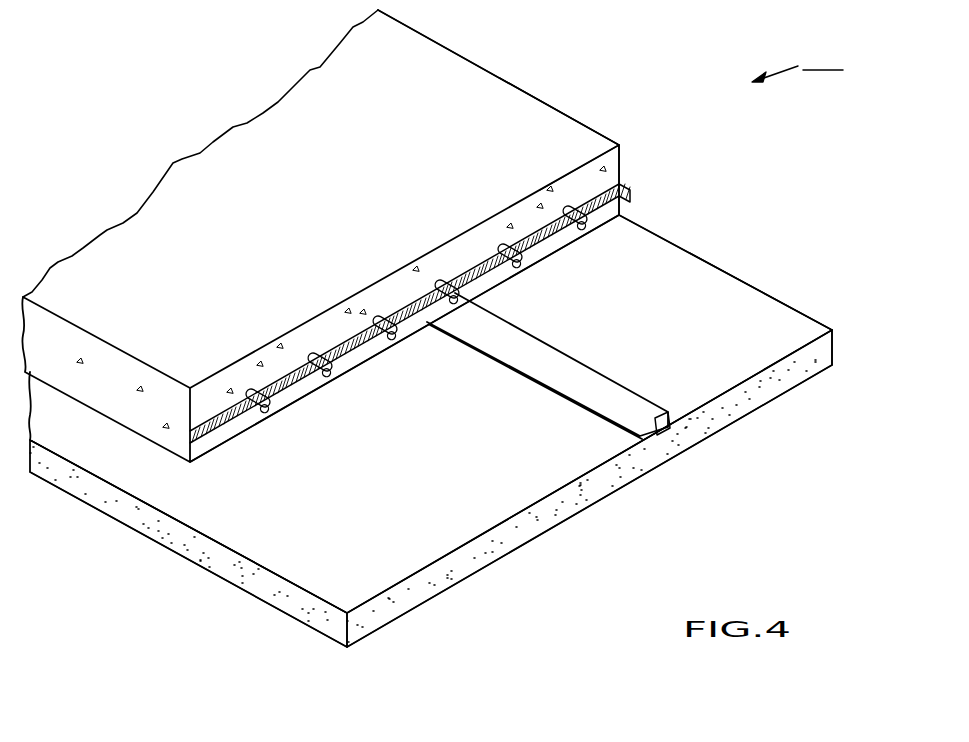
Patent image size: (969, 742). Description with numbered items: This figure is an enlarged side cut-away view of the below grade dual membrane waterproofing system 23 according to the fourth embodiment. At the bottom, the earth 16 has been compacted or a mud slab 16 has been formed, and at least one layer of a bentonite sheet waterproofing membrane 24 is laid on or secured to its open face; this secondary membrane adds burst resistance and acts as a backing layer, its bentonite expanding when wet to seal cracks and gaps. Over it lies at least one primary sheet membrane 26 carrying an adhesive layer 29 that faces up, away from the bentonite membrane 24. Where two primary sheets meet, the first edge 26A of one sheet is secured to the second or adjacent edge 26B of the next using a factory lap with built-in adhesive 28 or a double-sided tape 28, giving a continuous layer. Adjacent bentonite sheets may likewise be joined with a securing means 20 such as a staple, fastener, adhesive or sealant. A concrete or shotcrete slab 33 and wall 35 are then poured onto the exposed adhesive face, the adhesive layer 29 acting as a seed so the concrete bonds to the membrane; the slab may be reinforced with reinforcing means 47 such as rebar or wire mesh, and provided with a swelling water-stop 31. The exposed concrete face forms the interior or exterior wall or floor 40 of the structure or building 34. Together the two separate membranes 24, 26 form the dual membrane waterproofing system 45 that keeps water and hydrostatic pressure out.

The compacted earth or mud slab 16 is at (597, 487).
The securing means 20 is at (554, 365).
The below grade dual membrane waterproofing system 23 is at (797, 63).
The bentonite sheet waterproofing membrane 24 is at (653, 230).
The primary sheet membrane 26 is at (750, 305).
The first edge of the primary membrane 26A is at (672, 427).
The second or adjacent edge of the primary membrane 26B is at (834, 330).
The double-sided tape or built-in lap adhesive 28 is at (672, 413).
The adhesive layer 29 is at (792, 325).
The water-stop 31 is at (215, 412).
The concrete or shotcrete slab 33 is at (403, 43).
The structure or building 34 is at (458, 68).
The concrete or shotcrete wall 35 is at (582, 142).
The interior or exterior wall or floor 40 is at (527, 115).
The dual membrane waterproofing system 45 is at (712, 262).
The reinforcing means 47 is at (273, 407).